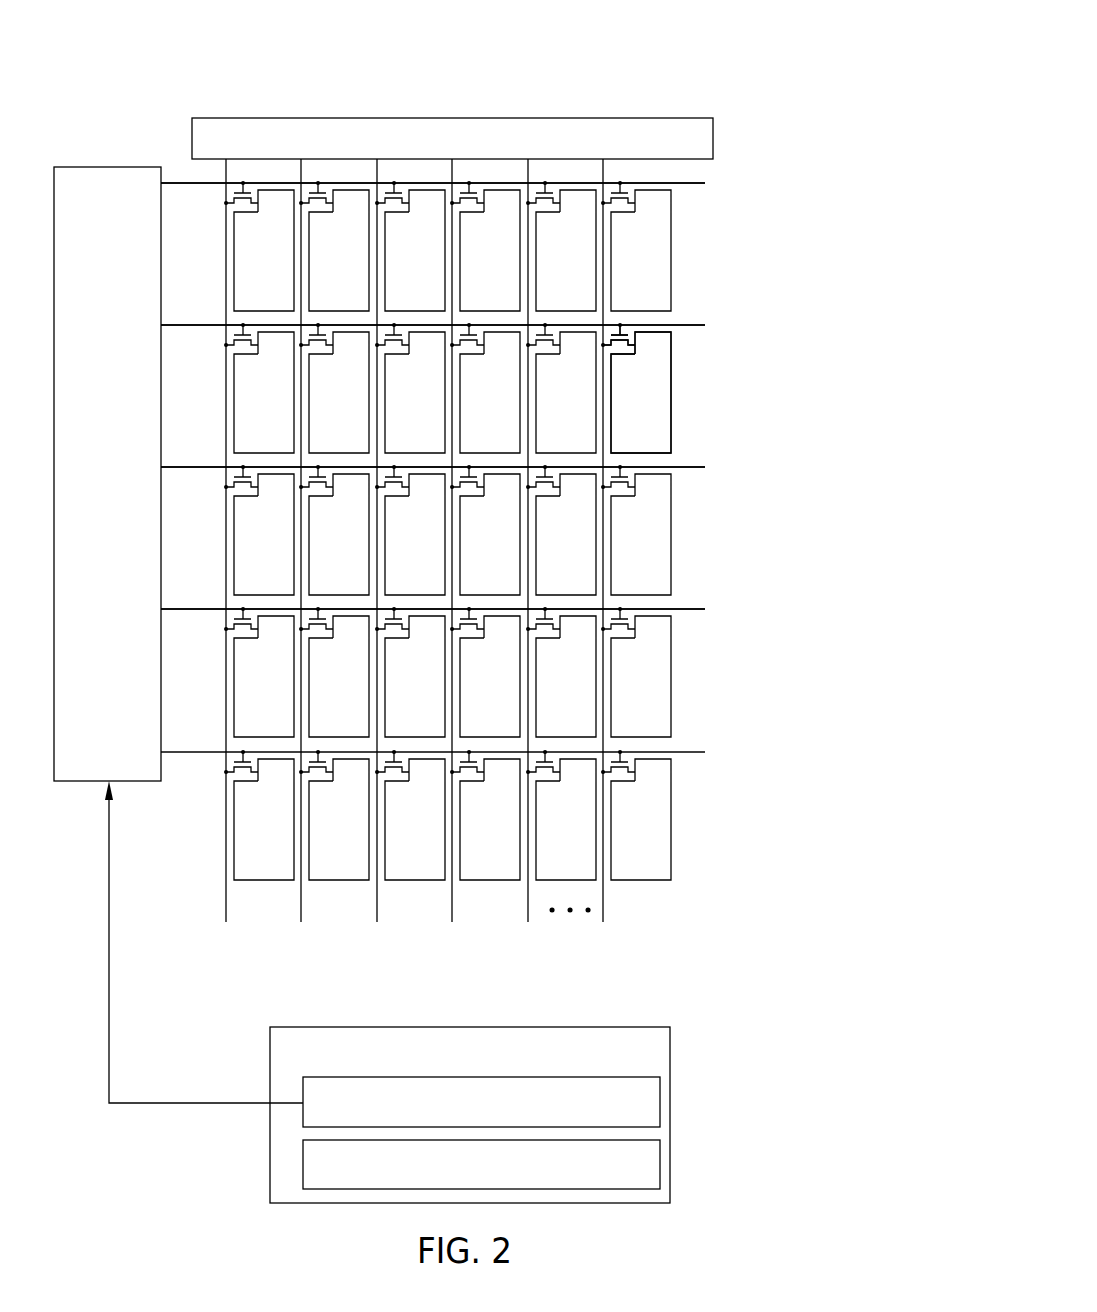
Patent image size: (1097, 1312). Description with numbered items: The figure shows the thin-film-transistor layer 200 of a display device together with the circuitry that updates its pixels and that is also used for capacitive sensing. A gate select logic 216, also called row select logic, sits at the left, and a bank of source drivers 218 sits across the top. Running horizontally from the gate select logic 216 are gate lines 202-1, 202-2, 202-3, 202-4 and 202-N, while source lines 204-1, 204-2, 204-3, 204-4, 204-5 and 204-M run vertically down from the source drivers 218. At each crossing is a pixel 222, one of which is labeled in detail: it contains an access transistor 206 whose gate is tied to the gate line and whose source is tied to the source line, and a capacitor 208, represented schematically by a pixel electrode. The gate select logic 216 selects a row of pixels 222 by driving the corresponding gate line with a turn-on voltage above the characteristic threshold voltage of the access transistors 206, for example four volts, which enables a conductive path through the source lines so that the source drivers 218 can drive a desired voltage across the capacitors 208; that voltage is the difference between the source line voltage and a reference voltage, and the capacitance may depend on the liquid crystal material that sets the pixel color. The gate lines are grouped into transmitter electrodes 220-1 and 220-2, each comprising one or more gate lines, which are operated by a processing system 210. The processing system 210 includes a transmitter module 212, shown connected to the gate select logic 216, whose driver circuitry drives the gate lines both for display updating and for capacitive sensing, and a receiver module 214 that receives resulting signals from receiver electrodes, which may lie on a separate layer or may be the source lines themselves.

The TFT layer 200 is at (665, 58).
The gate line 202-1 is at (688, 184).
The gate line 202-2 is at (688, 326).
The gate line 202-3 is at (688, 468).
The gate line 202-4 is at (688, 610).
The gate line 202-N is at (688, 753).
The source line 204-1 is at (226, 910).
The source line 204-2 is at (301, 910).
The source line 204-3 is at (377, 910).
The source line 204-4 is at (452, 910).
The source line 204-5 is at (528, 910).
The source line 204-M is at (603, 910).
The access transistor 206 is at (623, 358).
The capacitor 208 is at (671, 430).
The processing system 210 is at (650, 1062).
The transmitter module 212 is at (650, 1116).
The receiver module 214 is at (650, 1175).
The gate select logic 216 is at (127, 295).
The source drivers 218 is at (568, 150).
The transmitter electrode 220-1 is at (788, 173).
The transmitter electrode 220-2 is at (788, 465).
The pixel 222 is at (660, 364).